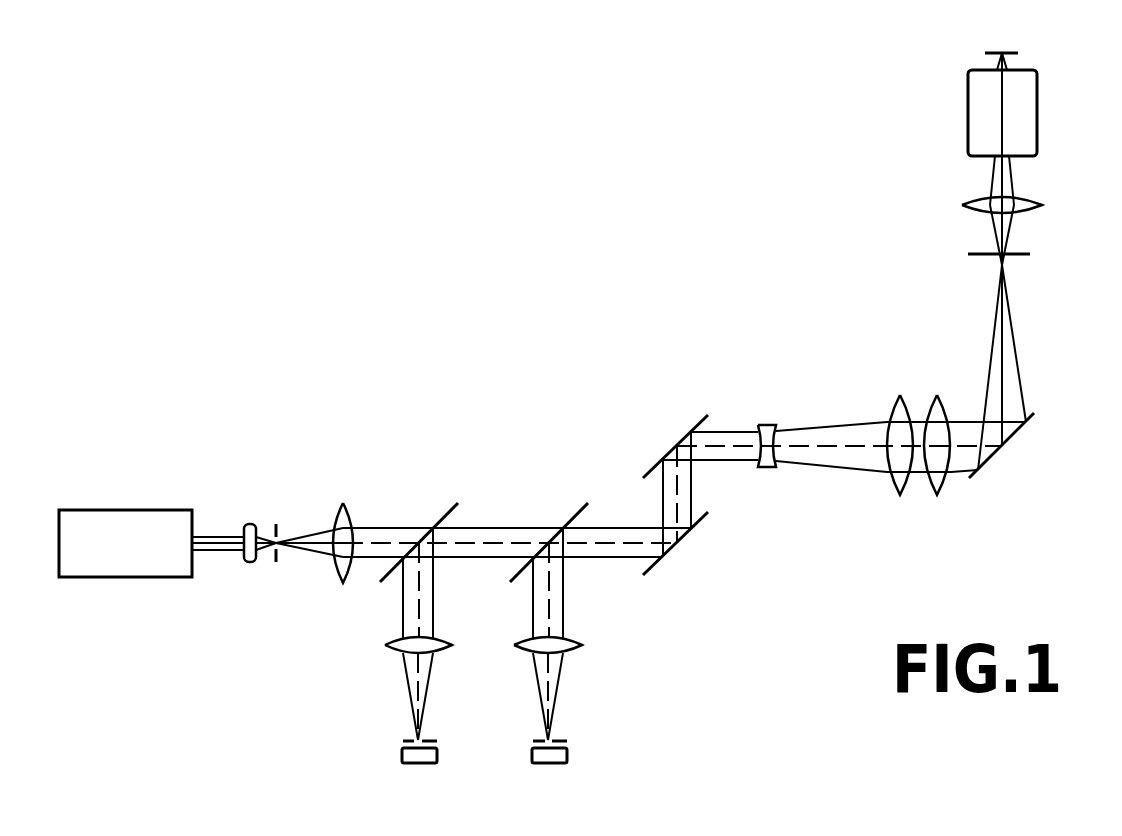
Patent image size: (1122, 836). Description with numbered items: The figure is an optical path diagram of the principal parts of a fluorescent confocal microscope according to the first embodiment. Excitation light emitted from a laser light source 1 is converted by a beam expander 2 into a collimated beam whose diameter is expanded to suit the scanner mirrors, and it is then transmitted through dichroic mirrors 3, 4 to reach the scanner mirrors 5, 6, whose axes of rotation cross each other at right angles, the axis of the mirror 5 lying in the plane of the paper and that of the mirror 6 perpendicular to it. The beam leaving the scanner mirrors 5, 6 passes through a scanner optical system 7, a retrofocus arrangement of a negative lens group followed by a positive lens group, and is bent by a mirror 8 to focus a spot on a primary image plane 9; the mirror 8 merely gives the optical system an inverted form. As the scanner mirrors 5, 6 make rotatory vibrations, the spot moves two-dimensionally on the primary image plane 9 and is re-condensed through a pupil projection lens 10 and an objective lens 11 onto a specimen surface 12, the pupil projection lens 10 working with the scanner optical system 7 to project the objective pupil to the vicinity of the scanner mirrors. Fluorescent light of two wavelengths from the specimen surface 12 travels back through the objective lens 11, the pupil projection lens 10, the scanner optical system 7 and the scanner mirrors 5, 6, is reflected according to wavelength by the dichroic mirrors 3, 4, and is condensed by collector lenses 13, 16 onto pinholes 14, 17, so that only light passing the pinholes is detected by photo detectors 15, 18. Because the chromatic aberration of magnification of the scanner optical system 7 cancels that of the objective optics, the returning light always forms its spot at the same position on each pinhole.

The laser light source 1 is at (122, 520).
The beam expander 2 is at (363, 501).
The dichroic mirror 3 is at (448, 508).
The dichroic mirror 4 is at (576, 508).
The scanner mirror 5 is at (692, 530).
The scanner mirror 6 is at (688, 433).
The scanner optical system 7 is at (952, 488).
The mirror 8 is at (1028, 420).
The primary image plane 9 is at (1030, 254).
The pupil projection lens 10 is at (1043, 205).
The objective lens 11 is at (1038, 113).
The specimen surface 12 is at (1018, 53).
The collector lens 13 is at (582, 646).
The pinhole 14 is at (562, 740).
The photo detector 15 is at (567, 755).
The collector lens 16 is at (385, 646).
The pinhole 17 is at (406, 740).
The photo detector 18 is at (402, 755).